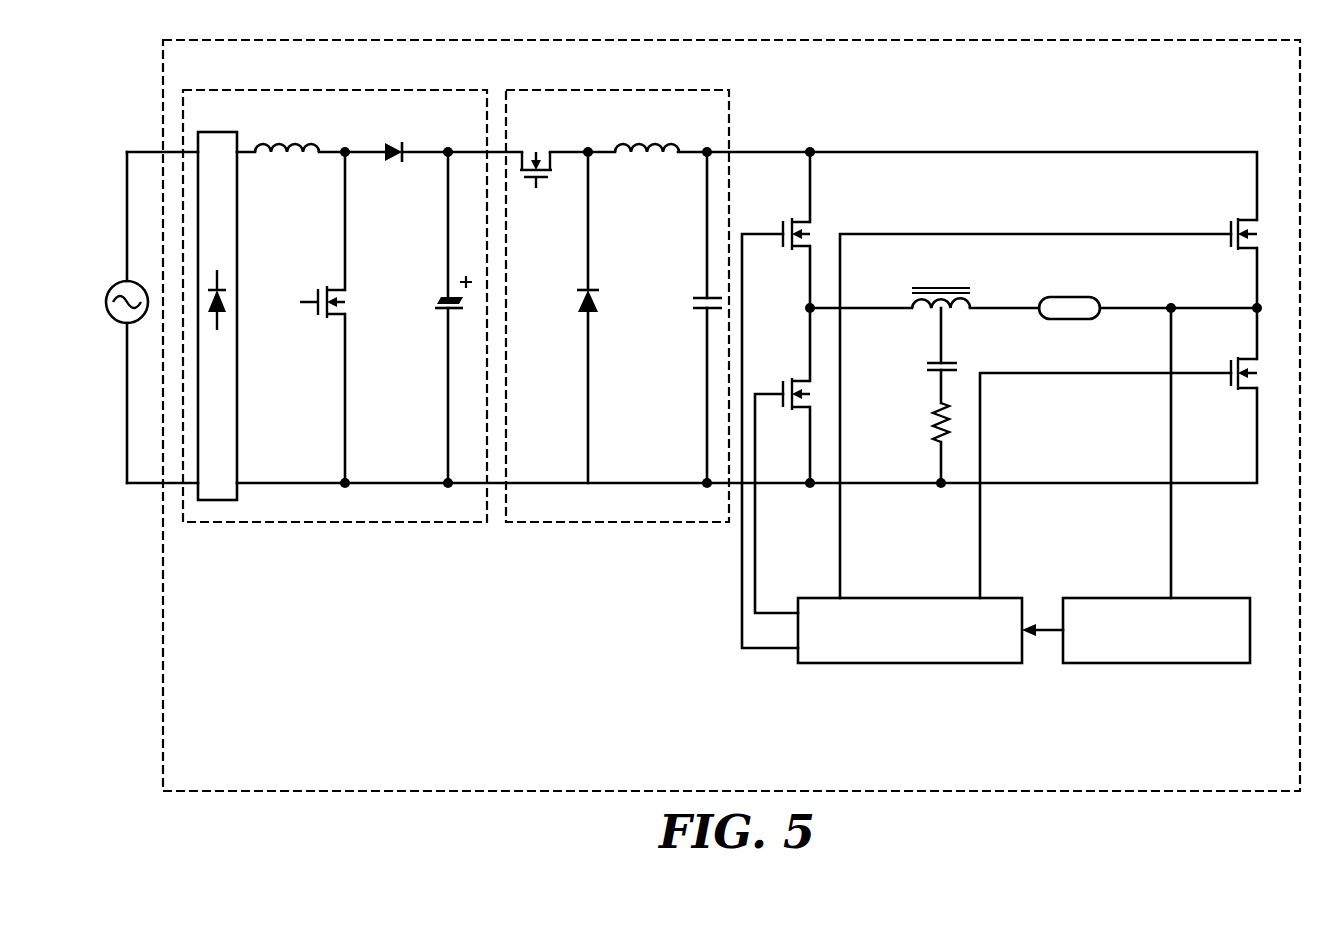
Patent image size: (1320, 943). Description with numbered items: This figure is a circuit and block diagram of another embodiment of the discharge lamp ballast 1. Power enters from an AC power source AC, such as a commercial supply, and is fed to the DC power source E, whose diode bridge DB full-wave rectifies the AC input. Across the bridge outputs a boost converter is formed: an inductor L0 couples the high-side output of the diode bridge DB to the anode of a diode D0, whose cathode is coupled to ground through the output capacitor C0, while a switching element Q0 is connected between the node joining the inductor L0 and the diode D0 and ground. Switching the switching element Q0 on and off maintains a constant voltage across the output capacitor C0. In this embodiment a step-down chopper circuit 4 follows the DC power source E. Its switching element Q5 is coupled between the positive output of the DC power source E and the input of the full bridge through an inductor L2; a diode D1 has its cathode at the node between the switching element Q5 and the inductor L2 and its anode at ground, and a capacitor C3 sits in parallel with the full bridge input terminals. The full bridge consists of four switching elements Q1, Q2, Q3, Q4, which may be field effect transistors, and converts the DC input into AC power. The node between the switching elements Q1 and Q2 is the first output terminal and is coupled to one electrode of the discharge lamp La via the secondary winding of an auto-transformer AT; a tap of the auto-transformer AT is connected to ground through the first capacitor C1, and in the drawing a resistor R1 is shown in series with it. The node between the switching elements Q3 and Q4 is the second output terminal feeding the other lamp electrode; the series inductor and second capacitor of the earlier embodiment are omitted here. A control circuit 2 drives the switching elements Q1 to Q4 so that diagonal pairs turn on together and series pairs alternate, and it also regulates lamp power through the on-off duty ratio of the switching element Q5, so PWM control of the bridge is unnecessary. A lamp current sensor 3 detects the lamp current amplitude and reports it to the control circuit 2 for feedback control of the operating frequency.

The discharge lamp ballast 1 is at (1073, 40).
The DC power source E is at (327, 90).
The step-down chopper circuit 4 is at (585, 90).
The control circuit 2 is at (902, 598).
The lamp current sensor 3 is at (1197, 598).
The AC power source AC is at (118, 291).
The diode bridge DB is at (217, 301).
The inductor L0 is at (287, 132).
The diode D0 is at (394, 137).
The switching element Q0 is at (307, 302).
The output capacitor C0 is at (441, 308).
The switching element Q5 is at (535, 154).
The inductor L2 is at (647, 133).
The diode D1 is at (570, 304).
The capacitor C3 is at (691, 304).
The switching element Q1 is at (791, 220).
The switching element Q2 is at (791, 380).
The switching element Q3 is at (1260, 234).
The switching element Q4 is at (1260, 373).
The auto-transformer AT is at (941, 286).
The discharge lamp La is at (1069, 294).
The first capacitor C1 is at (925, 365).
The sensing resistor R1 is at (923, 422).